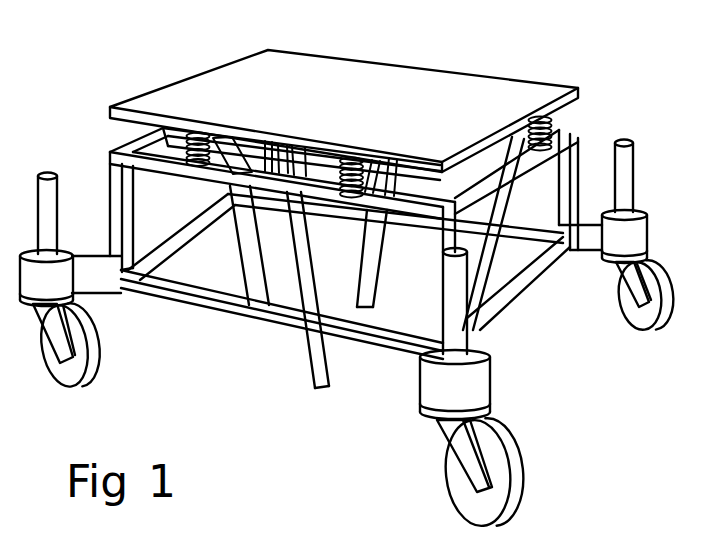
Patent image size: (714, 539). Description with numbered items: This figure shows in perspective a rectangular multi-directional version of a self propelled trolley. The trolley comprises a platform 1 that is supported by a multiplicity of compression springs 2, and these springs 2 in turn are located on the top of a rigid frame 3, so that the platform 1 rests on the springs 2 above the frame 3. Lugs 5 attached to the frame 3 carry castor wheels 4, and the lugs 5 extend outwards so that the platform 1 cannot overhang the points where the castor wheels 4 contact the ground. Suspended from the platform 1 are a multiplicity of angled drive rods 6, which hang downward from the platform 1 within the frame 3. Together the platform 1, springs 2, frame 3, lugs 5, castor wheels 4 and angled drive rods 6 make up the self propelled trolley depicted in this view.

The platform 1 is at (378, 88).
The compression springs 2 is at (548, 130).
The rigid frame 3 is at (117, 203).
The castor wheels 4 is at (497, 448).
The lugs 5 is at (467, 388).
The angled drive rods 6 is at (307, 270).